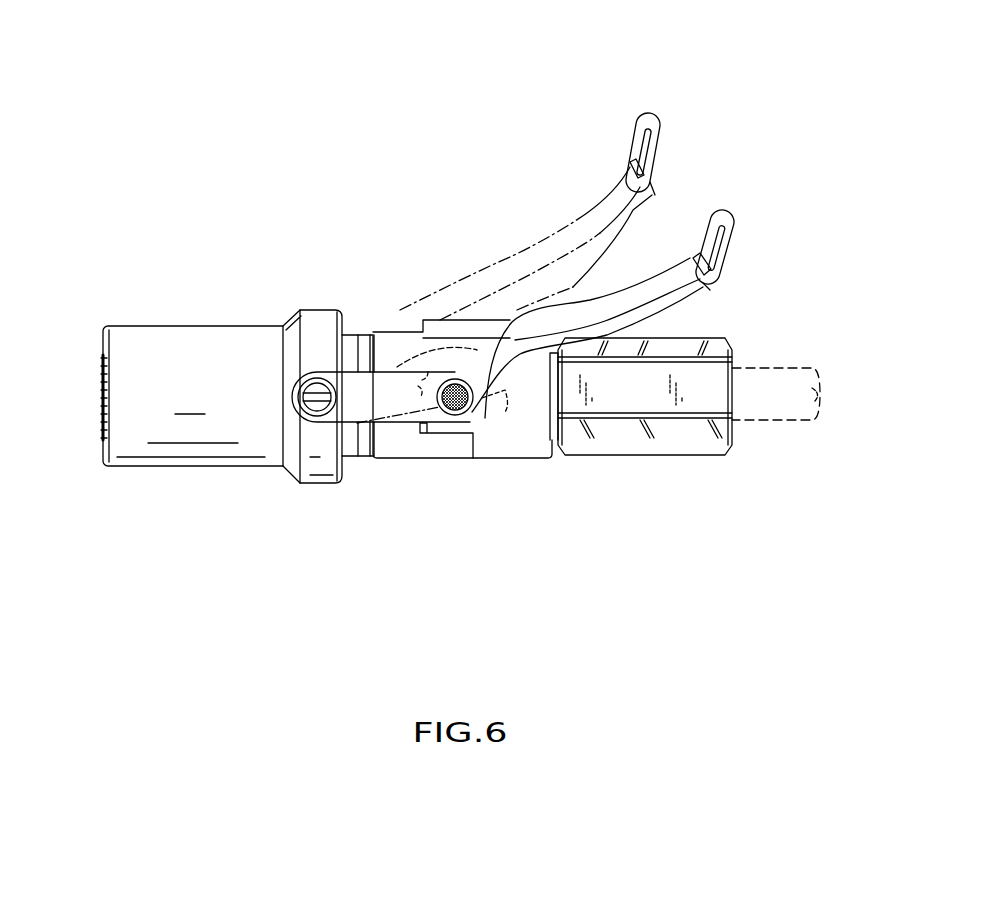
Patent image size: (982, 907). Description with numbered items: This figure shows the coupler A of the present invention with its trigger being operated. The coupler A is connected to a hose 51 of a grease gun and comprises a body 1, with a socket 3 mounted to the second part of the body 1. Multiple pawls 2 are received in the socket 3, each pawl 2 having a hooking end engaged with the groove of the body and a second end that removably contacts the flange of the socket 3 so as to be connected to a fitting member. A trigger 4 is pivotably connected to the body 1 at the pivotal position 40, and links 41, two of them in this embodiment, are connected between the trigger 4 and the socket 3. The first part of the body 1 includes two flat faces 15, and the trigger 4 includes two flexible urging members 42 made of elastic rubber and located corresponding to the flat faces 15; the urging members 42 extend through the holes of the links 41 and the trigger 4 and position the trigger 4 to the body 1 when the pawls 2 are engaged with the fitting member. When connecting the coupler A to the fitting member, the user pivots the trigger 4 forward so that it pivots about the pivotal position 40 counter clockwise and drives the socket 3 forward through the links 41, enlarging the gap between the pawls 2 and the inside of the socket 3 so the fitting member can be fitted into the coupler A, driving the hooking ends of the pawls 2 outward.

The coupler A is at (327, 112).
The body 1 is at (422, 457).
The pawls 2 is at (98, 395).
The socket 3 is at (163, 327).
The trigger 4 is at (557, 240).
The flat faces 15 is at (508, 420).
The pivotal position 40 is at (372, 388).
The links 41 is at (360, 455).
The flexible urging members 42 is at (455, 417).
The hose 51 is at (773, 365).